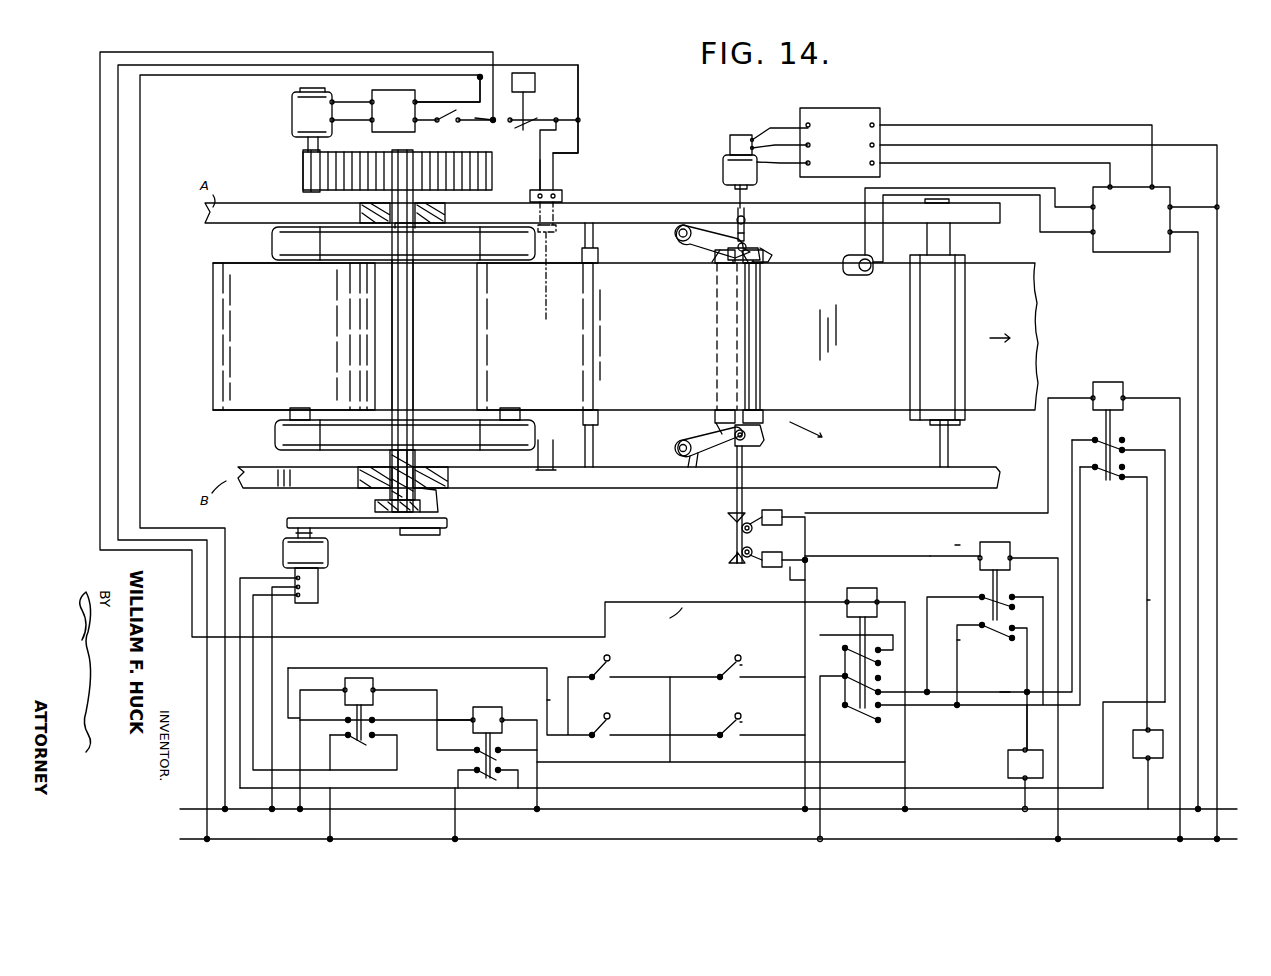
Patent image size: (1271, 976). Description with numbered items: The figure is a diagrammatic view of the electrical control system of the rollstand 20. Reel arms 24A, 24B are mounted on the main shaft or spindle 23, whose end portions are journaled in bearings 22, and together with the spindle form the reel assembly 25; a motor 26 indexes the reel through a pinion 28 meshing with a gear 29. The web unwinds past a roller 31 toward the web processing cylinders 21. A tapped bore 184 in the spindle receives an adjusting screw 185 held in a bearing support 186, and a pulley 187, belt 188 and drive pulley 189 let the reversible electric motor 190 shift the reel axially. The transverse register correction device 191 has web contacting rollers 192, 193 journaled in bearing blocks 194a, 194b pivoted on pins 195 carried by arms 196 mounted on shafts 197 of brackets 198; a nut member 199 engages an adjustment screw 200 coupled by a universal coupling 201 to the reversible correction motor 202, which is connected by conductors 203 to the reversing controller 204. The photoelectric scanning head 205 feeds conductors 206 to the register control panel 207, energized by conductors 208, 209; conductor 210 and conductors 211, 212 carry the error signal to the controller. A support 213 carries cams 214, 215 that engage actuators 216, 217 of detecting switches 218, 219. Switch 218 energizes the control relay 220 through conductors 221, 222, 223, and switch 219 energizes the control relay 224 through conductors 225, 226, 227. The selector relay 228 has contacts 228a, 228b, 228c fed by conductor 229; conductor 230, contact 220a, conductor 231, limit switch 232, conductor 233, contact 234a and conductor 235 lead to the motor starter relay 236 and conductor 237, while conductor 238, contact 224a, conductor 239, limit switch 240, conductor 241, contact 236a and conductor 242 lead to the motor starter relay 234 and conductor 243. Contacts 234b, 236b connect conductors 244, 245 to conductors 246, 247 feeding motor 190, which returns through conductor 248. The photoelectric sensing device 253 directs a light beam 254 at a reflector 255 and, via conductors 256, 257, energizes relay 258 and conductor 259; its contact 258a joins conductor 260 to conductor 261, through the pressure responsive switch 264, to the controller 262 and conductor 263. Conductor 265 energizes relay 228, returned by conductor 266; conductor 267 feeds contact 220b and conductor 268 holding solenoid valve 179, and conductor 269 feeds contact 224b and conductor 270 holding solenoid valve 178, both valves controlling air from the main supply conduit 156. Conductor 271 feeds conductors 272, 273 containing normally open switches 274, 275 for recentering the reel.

The rollstand 20 is at (205, 353).
The web processing cylinders 21 is at (958, 316).
The bearings 22 is at (448, 194).
The main shaft or spindle 23 is at (413, 312).
The reel arm 24A is at (272, 245).
The reel arm 24B is at (278, 432).
The reel assembly 25 is at (238, 446).
The motor 26 is at (292, 128).
The pinion 28 is at (302, 178).
The gear 29 is at (480, 116).
The roller 31 is at (594, 426).
The main supply conduit 156 is at (206, 680).
The solenoid valve 178 is at (1016, 764).
The solenoid valve 179 is at (1144, 764).
The tapped bore 184 is at (390, 466).
The adjusting screw 185 is at (378, 507).
The bearing support 186 is at (438, 507).
The pulley 187 is at (382, 536).
The belt 188 is at (372, 535).
The drive pulley 189 is at (324, 520).
The reversible electric motor 190 is at (320, 560).
The transverse register correction device 191 is at (819, 437).
The web contacting roller 192 is at (764, 332).
The web contacting roller 193 is at (722, 328).
The bearing block 194a is at (766, 246).
The bearing block 194b is at (754, 440).
The pins 195 is at (726, 258).
The arms 196 is at (712, 252).
The shafts 197 is at (700, 222).
The brackets 198 is at (680, 244).
The nut member 199 is at (748, 232).
The adjustment screw 200 is at (748, 216).
The universal coupling 201 is at (732, 200).
The reversible correction motor 202 is at (722, 162).
The conductors 203 is at (765, 130).
The reversing controller 204 is at (866, 115).
The photoelectric scanning head 205 is at (870, 276).
The conductors 206 is at (1024, 209).
The register control panel 207 is at (1138, 252).
The conductor 208 is at (1199, 190).
The conductor 209 is at (1197, 290).
The conductor 210 is at (1205, 144).
The conductor 211 is at (1052, 162).
The conductor 212 is at (1075, 124).
The support 213 is at (730, 502).
The cam 214 is at (726, 522).
The cam 215 is at (729, 561).
The actuator 216 is at (748, 518).
The actuator 217 is at (738, 566).
The detecting switch 218 is at (776, 527).
The detecting switch 219 is at (774, 573).
The control relay 220 is at (1108, 380).
The relay contact 220a is at (1122, 440).
The relay contact 220b is at (1124, 478).
The conductor 221 is at (1146, 388).
The conductor 222 is at (1046, 450).
The conductor 223 is at (812, 554).
The control relay 224 is at (991, 544).
The relay contact 224a is at (985, 644).
The relay contact 224b is at (992, 687).
The conductor 225 is at (1056, 556).
The conductor 226 is at (935, 548).
The conductor 227 is at (794, 578).
The selector relay 228 is at (860, 592).
The normally closed contact 228a is at (843, 748).
The normally open contact 228b is at (850, 650).
The normally open contact 228c is at (853, 687).
The conductor 229 is at (830, 740).
The conductor 230 is at (1008, 694).
The conductor 231 is at (1128, 702).
The limit switch 232 is at (620, 680).
The conductor 233 is at (556, 742).
The motor starter relay 234 is at (490, 710).
The normally closed contact 234a is at (459, 755).
The normally open contact 234b is at (462, 776).
The conductor 235 is at (426, 696).
The motor starter relay 236 is at (374, 690).
The normally closed contact 236a is at (374, 722).
The normally open contact 236b is at (363, 752).
The conductor 237 is at (326, 686).
The conductor 238 is at (966, 594).
The conductor 239 is at (949, 734).
The limit switch 240 is at (606, 740).
The conductor 241 is at (490, 670).
The conductor 242 is at (427, 730).
The conductor 243 is at (541, 800).
The conductor 244 is at (470, 834).
The conductor 245 is at (336, 832).
The conductor 246 is at (410, 788).
The conductor 247 is at (338, 768).
The conductor 248 is at (286, 664).
The photoelectric sensing device 253 is at (554, 212).
The light beam 254 is at (582, 424).
The reflector 255 is at (550, 480).
The conductor 256 is at (582, 138).
The conductor 257 is at (538, 180).
The relay 258 is at (533, 72).
The normally open contact 258a is at (528, 154).
The conductor 259 is at (156, 170).
The conductor 260 is at (578, 112).
The conductor 261 is at (472, 130).
The controller 262 is at (372, 132).
The conductor 263 is at (462, 96).
The pressure responsive switch 264 is at (424, 130).
The conductor 265 is at (406, 52).
The conductor 266 is at (903, 602).
The conductor 267 is at (943, 708).
The conductor 268 is at (1148, 570).
The conductor 269 is at (957, 658).
The conductor 270 is at (1024, 731).
The conductor 271 is at (790, 620).
The conductor 272 is at (706, 678).
The conductor 273 is at (706, 732).
The normally open switch 274 is at (748, 655).
The normally open switch 275 is at (750, 711).